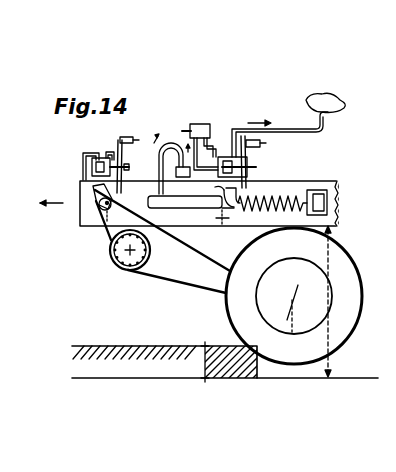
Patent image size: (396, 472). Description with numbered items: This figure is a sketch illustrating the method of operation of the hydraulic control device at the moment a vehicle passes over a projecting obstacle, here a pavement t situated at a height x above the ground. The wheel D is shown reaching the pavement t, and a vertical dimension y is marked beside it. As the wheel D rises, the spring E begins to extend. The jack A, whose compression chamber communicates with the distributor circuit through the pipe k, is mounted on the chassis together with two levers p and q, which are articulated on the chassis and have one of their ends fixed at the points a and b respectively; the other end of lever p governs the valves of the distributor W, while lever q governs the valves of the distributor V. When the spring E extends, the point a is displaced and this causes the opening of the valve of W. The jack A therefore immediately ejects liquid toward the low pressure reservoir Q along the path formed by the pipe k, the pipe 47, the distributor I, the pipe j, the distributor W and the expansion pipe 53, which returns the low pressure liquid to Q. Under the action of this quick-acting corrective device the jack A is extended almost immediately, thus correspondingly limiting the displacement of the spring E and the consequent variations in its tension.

The distributor V is at (91, 163).
The lever q is at (118, 143).
The pipe k is at (168, 142).
The distributor I is at (203, 123).
The pipe j is at (213, 148).
The distributor W is at (243, 135).
The expansion pipe 53 is at (296, 128).
The low pressure reservoir Q is at (331, 104).
The lever p is at (249, 178).
The spring E is at (278, 197).
The fixed point b is at (96, 199).
The jack A is at (170, 203).
The fixed point a is at (222, 191).
The pipe 47 is at (211, 188).
The wheel D is at (358, 291).
The vertical distance y is at (321, 301).
The pavement t is at (110, 346).
The height x is at (199, 362).